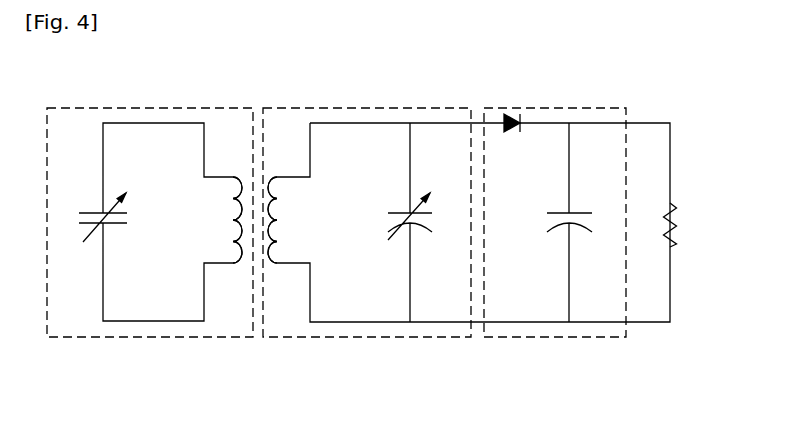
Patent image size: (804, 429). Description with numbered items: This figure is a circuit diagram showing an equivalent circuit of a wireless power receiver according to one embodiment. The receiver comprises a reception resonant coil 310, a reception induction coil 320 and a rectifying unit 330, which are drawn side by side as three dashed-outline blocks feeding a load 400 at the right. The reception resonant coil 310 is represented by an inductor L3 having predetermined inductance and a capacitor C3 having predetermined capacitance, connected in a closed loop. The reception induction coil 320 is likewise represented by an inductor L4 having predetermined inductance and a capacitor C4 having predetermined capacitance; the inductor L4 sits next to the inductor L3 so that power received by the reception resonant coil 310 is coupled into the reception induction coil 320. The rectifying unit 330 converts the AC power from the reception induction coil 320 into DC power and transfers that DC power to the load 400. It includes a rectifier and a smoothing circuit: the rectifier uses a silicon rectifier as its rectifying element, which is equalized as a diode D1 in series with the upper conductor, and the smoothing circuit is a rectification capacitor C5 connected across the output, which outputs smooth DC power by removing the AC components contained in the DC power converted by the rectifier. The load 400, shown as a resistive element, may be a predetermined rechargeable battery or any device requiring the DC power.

The reception resonant coil 310 is at (150, 197).
The reception induction coil 320 is at (466, 197).
The rectifying unit 330 is at (555, 197).
The load 400 is at (684, 203).
The capacitor C3 is at (91, 217).
The inductor L3 is at (222, 220).
The inductor L4 is at (292, 220).
The capacitor C4 is at (424, 222).
The diode D1 is at (513, 105).
The rectification capacitor C5 is at (583, 222).